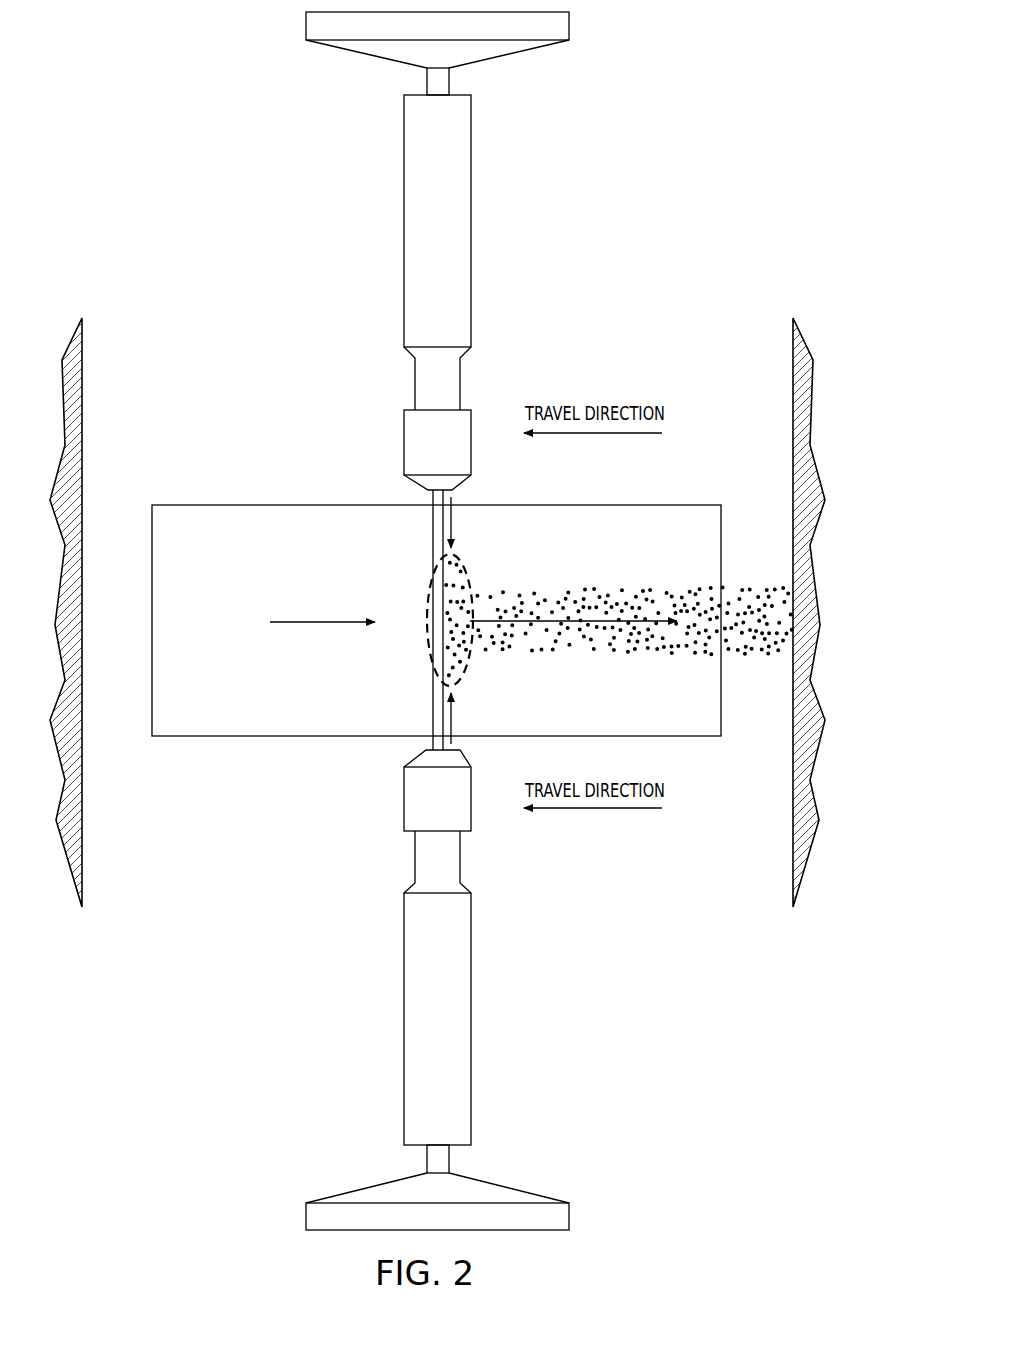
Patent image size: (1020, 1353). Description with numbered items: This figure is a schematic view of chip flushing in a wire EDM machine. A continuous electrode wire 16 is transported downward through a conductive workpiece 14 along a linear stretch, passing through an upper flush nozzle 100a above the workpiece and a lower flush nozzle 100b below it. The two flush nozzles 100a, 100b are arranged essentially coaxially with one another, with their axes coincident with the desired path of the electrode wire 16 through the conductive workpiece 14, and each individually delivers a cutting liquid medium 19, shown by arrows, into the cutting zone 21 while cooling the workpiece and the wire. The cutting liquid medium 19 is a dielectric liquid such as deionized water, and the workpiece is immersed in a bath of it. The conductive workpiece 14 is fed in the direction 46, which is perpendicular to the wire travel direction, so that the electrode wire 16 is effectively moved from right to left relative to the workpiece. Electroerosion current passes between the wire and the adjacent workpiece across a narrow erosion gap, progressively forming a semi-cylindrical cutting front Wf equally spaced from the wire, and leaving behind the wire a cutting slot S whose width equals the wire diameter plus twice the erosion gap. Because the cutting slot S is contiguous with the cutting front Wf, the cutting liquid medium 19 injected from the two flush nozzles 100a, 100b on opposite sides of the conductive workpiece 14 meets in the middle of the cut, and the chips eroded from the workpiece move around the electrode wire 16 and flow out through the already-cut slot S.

The upper flush nozzle 100a is at (494, 211).
The lower flush nozzle 100b is at (494, 1021).
The conductive workpiece 14 is at (152, 566).
The electrode wire 16 is at (433, 502).
The cutting liquid medium 19 is at (453, 527).
The cutting slot S is at (453, 622).
The cutting front Wf is at (432, 666).
The cutting zone 21 is at (470, 650).
The workpiece feed direction 46 is at (313, 622).